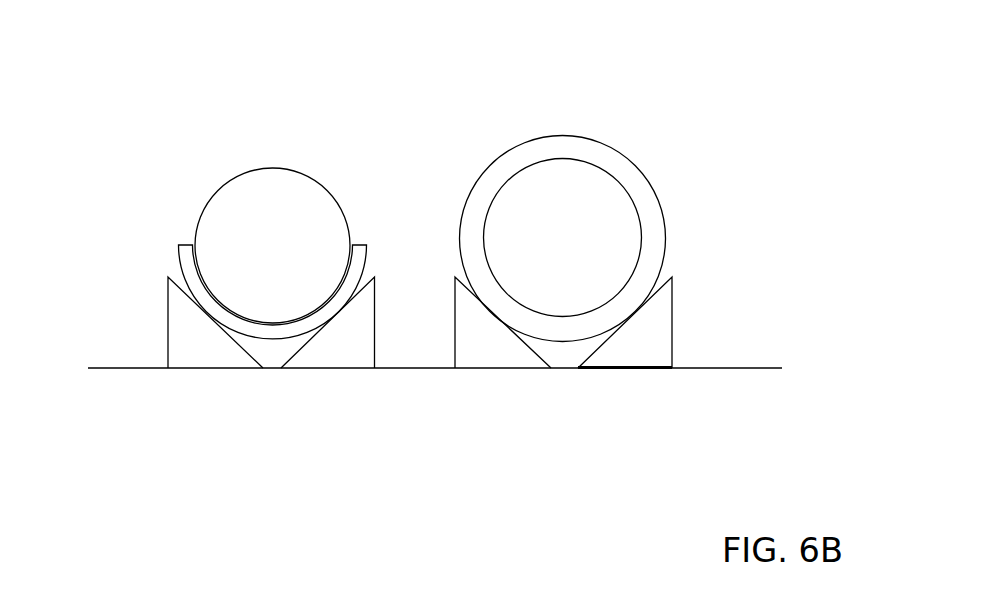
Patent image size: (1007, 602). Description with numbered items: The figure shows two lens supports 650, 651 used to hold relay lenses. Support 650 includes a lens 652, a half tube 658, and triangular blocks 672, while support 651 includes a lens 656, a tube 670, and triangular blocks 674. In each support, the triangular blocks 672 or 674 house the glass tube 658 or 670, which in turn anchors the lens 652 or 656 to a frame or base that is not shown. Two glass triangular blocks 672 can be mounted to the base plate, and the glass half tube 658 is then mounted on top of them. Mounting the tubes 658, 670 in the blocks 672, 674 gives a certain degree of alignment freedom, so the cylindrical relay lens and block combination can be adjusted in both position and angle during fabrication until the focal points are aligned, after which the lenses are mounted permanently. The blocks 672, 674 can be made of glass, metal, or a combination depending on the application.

The lens support 650 is at (201, 84).
The lens support 651 is at (513, 114).
The lens 652 is at (284, 262).
The lens 656 is at (578, 259).
The half tube 658 is at (186, 243).
The tube 670 is at (615, 165).
The triangular blocks 672 is at (214, 357).
The triangular blocks 674 is at (503, 357).